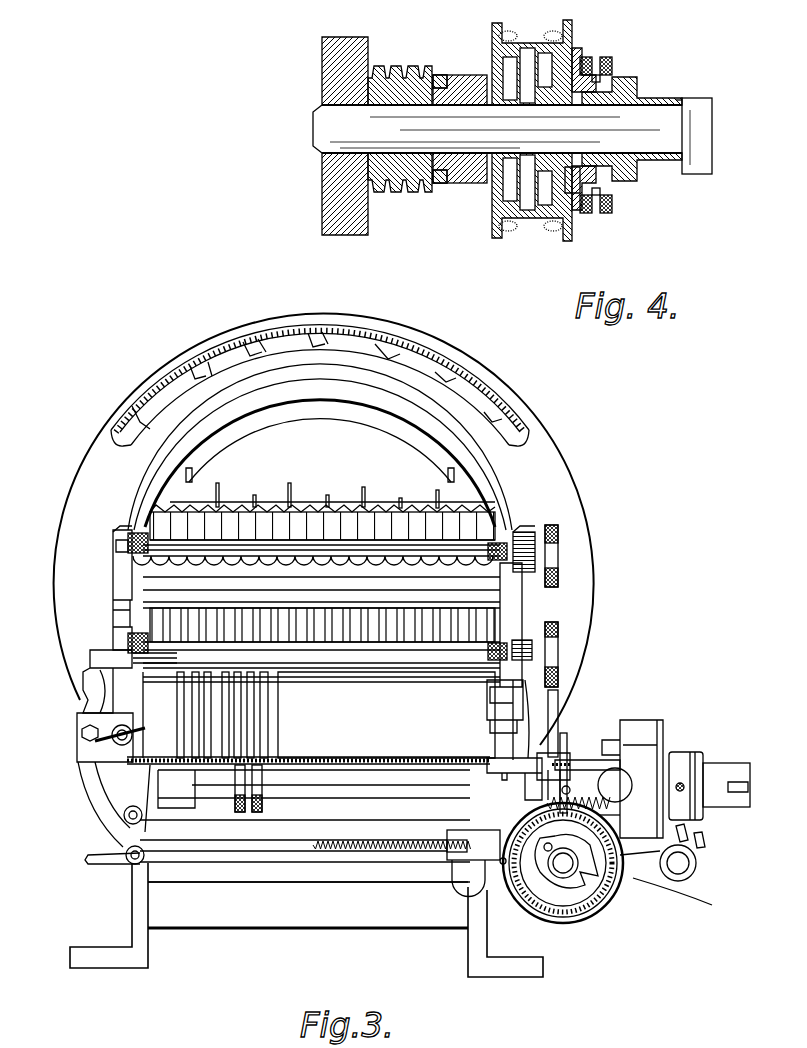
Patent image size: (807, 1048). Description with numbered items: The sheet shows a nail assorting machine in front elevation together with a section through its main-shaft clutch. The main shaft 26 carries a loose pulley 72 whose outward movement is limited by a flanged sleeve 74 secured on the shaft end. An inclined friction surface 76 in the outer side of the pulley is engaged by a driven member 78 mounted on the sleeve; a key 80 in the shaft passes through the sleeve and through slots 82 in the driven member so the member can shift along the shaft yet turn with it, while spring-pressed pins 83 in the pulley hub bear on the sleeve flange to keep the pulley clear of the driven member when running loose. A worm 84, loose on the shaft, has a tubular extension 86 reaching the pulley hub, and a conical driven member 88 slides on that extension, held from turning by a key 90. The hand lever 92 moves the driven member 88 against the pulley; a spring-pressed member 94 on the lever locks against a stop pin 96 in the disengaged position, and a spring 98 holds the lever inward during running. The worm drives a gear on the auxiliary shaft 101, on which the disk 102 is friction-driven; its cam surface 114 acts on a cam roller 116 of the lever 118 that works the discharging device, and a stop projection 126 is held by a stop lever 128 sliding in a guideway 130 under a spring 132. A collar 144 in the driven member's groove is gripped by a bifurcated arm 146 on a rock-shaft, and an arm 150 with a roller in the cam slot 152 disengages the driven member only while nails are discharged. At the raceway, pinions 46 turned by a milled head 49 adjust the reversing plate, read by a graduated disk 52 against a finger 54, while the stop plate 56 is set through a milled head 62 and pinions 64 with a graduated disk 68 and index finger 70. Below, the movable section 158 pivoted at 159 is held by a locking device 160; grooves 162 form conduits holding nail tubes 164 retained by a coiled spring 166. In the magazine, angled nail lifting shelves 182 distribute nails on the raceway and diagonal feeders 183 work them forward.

In FIG. 4, the main shaft 26 is at (330, 131).
In FIG. 4, the loose pulley 72 is at (529, 42).
In FIG. 3, the loose pulley 72 is at (623, 758).
In FIG. 4, the flanged sleeve 74 is at (640, 97).
In FIG. 4, the inclined friction surface 76 is at (575, 55).
In FIG. 4, the driven member 78 is at (583, 62).
In FIG. 4, the key 80 is at (714, 103).
In FIG. 3, the key 80 is at (748, 787).
In FIG. 4, the slots 82 is at (681, 101).
In FIG. 3, the slots 82 is at (733, 793).
In FIG. 4, the spring-pressed pins 83 is at (573, 194).
In FIG. 4, the worm 84 is at (392, 67).
In FIG. 4, the tubular extension 86 is at (437, 193).
In FIG. 4, the driven member 88 is at (500, 60).
In FIG. 4, the key 90 is at (450, 78).
In FIG. 4, the collar 144 is at (637, 180).
In FIG. 4, the bifurcated arm 146 is at (610, 212).
In FIG. 3, the pinions 46 is at (127, 530).
In FIG. 3, the milled head 49 is at (558, 548).
In FIG. 3, the circular graduated disk 52 is at (532, 533).
In FIG. 3, the finger 54 is at (540, 553).
In FIG. 3, the stop plate 56 is at (150, 655).
In FIG. 3, the milled head 62 is at (550, 648).
In FIG. 3, the pinions 64 is at (130, 640).
In FIG. 3, the graduated disk 68 is at (507, 684).
In FIG. 3, the index finger 70 is at (517, 652).
In FIG. 3, the hand lever 92 is at (683, 783).
In FIG. 3, the spring-pressed member 94 is at (618, 782).
In FIG. 3, the stop pin 96 is at (640, 740).
In FIG. 3, the spring 98 is at (567, 788).
In FIG. 3, the auxiliary shaft 101 is at (563, 866).
In FIG. 3, the disk 102 is at (608, 897).
In FIG. 3, the cam surface 114 is at (578, 922).
In FIG. 3, the cam roller 116 is at (612, 815).
In FIG. 3, the lever 118 is at (558, 708).
In FIG. 3, the stop projection 126 is at (462, 860).
In FIG. 3, the stop lever 128 is at (288, 853).
In FIG. 3, the guideway 130 is at (460, 857).
In FIG. 3, the spring 132 is at (357, 848).
In FIG. 3, the arm 150 is at (660, 882).
In FIG. 3, the cam slot 152 is at (620, 887).
In FIG. 3, the movable section 158 is at (123, 687).
In FIG. 3, the pivot 159 is at (590, 765).
In FIG. 3, the locking device 160 is at (150, 700).
In FIG. 3, the grooves 162 is at (170, 735).
In FIG. 3, the nail tubes 164 is at (177, 777).
In FIG. 3, the coiled spring 166 is at (182, 742).
In FIG. 3, the nail lifting shelves 182 is at (243, 344).
In FIG. 3, the feeders 183 is at (298, 340).